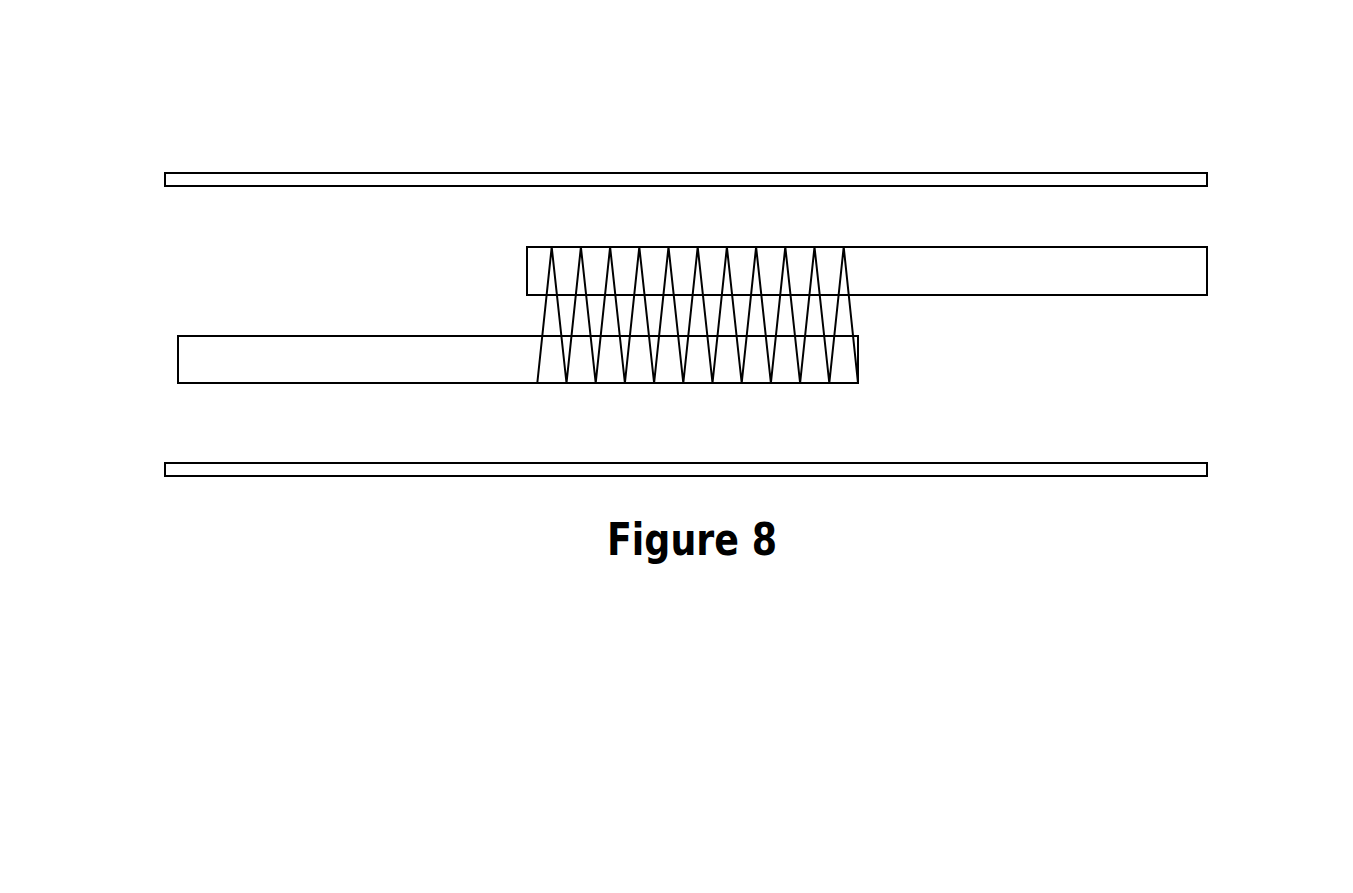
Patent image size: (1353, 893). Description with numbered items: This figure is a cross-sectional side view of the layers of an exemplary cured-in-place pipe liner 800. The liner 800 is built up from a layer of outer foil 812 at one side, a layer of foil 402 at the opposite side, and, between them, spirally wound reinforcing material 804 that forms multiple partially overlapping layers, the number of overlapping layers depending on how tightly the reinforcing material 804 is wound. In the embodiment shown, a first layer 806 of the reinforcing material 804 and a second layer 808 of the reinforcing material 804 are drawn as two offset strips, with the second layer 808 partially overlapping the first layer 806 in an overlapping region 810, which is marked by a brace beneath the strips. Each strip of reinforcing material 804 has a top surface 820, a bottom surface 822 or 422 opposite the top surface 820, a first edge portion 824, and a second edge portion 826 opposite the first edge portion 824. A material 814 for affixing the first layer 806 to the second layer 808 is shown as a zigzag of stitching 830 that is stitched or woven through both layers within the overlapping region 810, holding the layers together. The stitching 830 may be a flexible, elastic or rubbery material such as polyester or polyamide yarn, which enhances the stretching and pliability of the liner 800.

The liner 800 is at (206, 128).
The outer foil 812 is at (1207, 182).
The lower panel 402 is at (1207, 466).
The reinforcing material 804 is at (190, 347).
The first layer 806 is at (177, 367).
The second layer 808 is at (1208, 246).
The top surface 820 is at (232, 336).
The bottom surface 822 is at (253, 383).
The second surface of strip 422 is at (1103, 297).
The first edge portion 824 is at (495, 265).
The second edge portion 826 is at (890, 377).
The material for affixing 814 is at (670, 315).
The stitching 830 is at (525, 395).
The overlapping region 810 is at (670, 352).